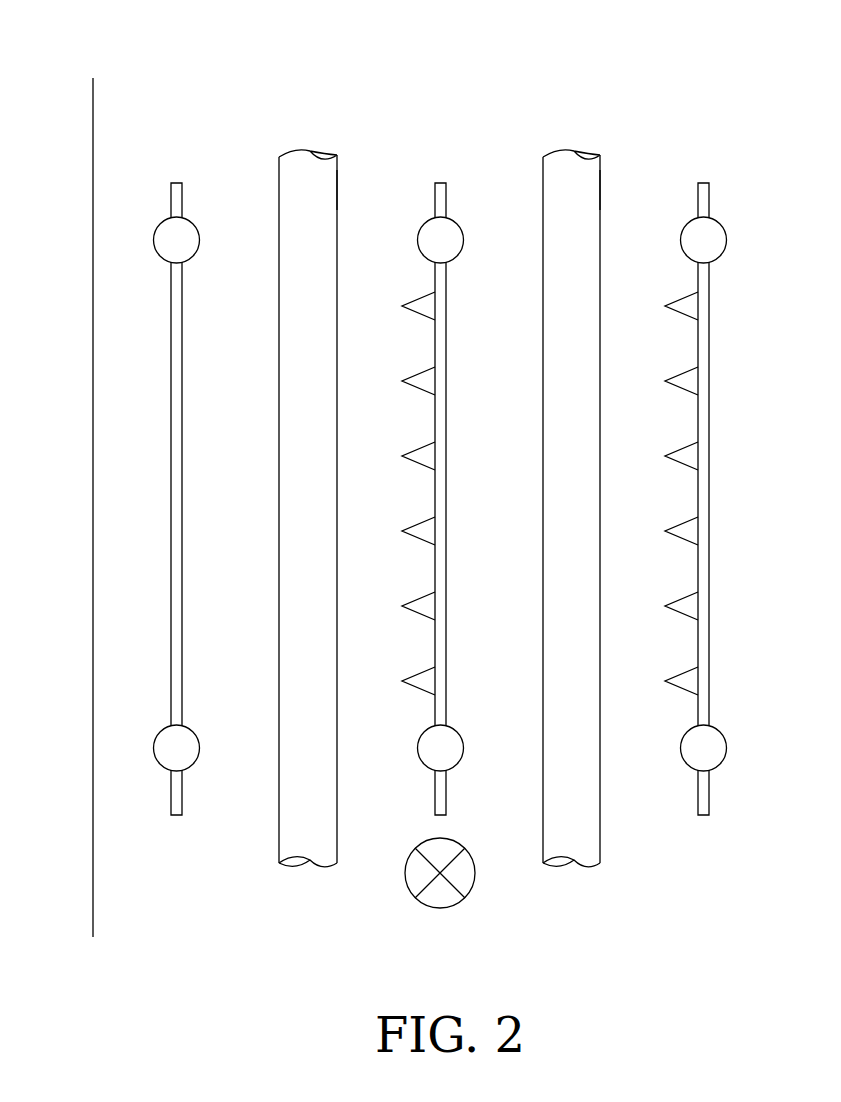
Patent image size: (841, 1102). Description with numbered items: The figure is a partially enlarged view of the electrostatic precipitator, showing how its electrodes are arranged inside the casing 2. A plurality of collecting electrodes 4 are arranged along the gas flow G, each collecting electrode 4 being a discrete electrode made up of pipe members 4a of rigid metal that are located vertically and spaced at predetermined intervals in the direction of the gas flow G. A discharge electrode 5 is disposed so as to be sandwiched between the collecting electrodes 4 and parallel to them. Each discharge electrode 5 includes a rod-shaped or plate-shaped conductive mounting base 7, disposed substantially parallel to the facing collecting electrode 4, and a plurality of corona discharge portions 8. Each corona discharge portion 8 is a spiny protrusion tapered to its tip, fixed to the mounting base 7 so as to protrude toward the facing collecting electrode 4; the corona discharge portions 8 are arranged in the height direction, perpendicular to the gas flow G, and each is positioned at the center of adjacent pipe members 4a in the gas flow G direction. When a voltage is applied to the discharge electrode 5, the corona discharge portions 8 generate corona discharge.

The casing 2 is at (92, 292).
The collecting electrode 4 is at (339, 92).
The pipe member 4a is at (337, 188).
The discharge electrode 5 is at (190, 157).
The mounting base 7 is at (199, 240).
The corona discharge portion 8 is at (400, 380).
The gas flow G is at (440, 898).